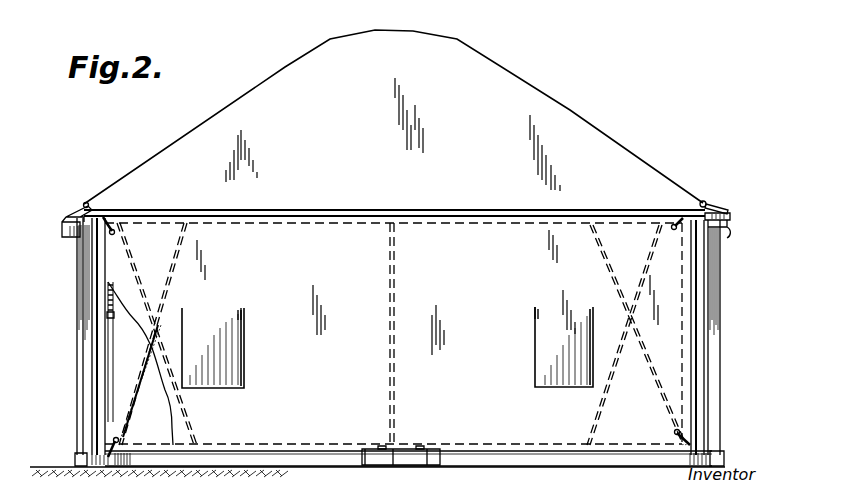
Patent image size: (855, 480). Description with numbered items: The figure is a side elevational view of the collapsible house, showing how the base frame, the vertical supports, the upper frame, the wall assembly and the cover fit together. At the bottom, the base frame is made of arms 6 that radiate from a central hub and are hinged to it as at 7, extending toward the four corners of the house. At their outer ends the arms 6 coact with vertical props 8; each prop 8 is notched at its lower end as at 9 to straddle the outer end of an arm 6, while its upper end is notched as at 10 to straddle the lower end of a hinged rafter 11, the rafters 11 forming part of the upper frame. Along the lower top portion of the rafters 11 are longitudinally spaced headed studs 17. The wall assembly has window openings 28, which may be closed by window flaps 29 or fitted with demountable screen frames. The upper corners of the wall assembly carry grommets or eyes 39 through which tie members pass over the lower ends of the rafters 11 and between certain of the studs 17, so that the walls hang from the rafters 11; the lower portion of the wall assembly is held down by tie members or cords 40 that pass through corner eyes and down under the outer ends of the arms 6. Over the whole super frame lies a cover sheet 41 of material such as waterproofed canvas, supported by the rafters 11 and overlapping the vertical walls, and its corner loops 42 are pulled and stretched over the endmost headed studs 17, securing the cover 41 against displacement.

The arms 6 is at (222, 454).
The hinge 7 is at (445, 446).
The vertical props 8 is at (78, 343).
The lower notches of props 9 is at (83, 452).
The upper notches of props 10 is at (83, 230).
The hinged rafters 11 is at (63, 240).
The headed studs 17 is at (733, 207).
The window openings 28 is at (248, 372).
The window flaps 29 is at (225, 325).
The grommets or eyes 39 is at (105, 213).
The tie members or cords 40 is at (690, 450).
The cover sheet 41 is at (640, 153).
The loops 42 is at (708, 202).